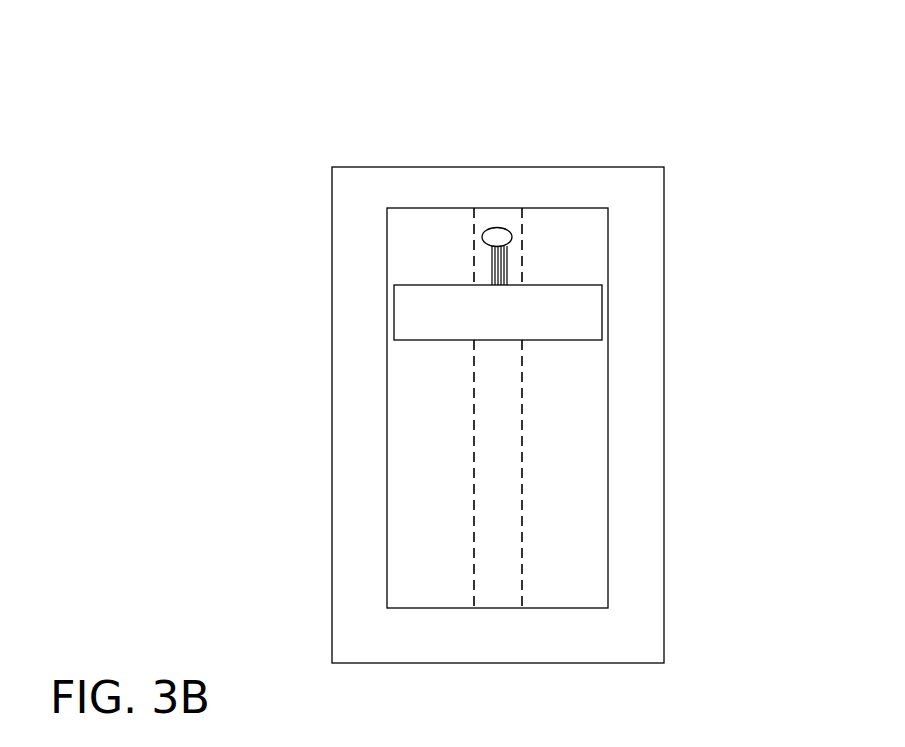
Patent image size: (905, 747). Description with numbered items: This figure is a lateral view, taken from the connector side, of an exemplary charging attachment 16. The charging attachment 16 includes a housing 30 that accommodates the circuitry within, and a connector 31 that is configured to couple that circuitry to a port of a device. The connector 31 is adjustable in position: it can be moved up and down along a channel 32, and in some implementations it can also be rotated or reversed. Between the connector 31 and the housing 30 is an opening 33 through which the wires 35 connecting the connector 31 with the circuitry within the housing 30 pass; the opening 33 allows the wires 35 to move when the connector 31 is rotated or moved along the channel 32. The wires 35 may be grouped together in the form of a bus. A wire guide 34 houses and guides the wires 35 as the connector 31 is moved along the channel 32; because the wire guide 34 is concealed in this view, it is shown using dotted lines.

The charging attachment 16 is at (435, 132).
The housing 30 is at (661, 223).
The connector 31 is at (423, 298).
The channel 32 is at (395, 447).
The opening 33 is at (492, 237).
The wire guide 34 is at (492, 572).
The wires 35 is at (497, 263).